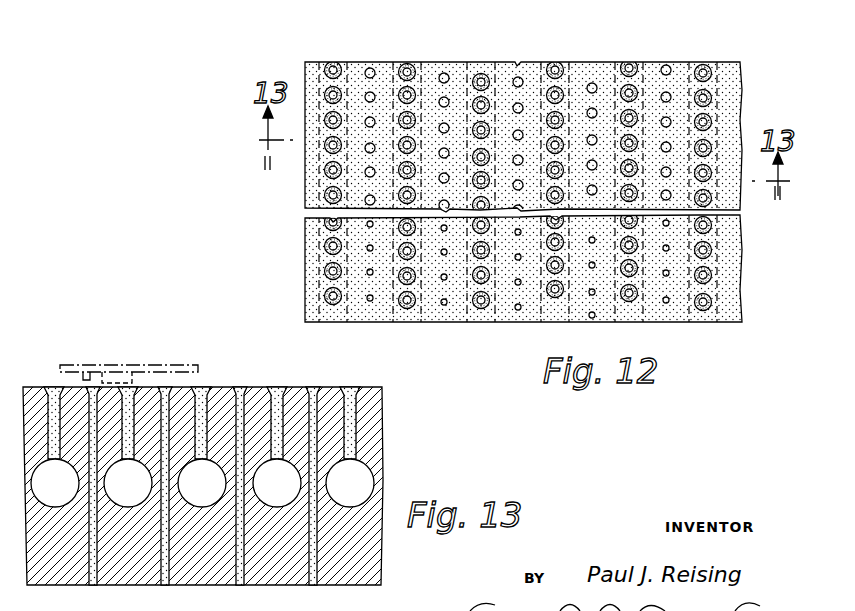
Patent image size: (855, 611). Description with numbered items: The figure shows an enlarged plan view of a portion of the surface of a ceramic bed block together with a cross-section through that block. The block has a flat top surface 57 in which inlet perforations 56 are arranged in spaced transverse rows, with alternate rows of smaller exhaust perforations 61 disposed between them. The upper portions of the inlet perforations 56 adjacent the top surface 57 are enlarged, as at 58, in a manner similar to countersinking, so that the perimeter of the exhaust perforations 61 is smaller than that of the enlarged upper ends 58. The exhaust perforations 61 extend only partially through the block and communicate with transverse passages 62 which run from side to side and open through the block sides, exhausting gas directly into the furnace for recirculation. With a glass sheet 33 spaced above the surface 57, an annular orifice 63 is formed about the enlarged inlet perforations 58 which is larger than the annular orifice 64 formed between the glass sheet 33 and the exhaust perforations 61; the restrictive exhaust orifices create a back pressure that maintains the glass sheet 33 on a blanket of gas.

In FIG. 13, the glass sheet 33 is at (88, 364).
In FIG. 12, the inlet perforations 56 is at (402, 71).
In FIG. 13, the inlet perforations 56 is at (163, 478).
In FIG. 13, the top surface 57 is at (218, 387).
In FIG. 12, the enlarged upper portion 58 is at (414, 66).
In FIG. 13, the enlarged upper portion 58 is at (313, 389).
In FIG. 12, the exhaust perforations 61 is at (518, 77).
In FIG. 13, the exhaust perforations 61 is at (355, 424).
In FIG. 13, the transverse passages 62 is at (372, 487).
In FIG. 13, the annular orifice 63 is at (83, 377).
In FIG. 13, the annular orifice 64 is at (127, 384).